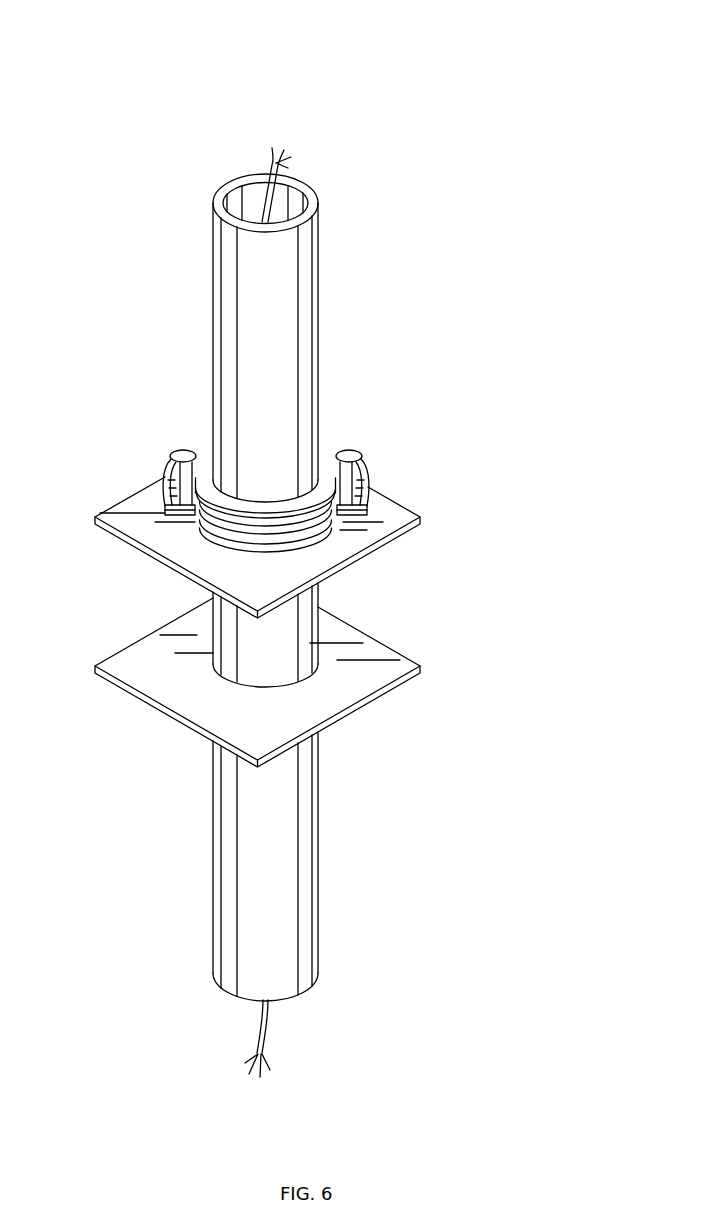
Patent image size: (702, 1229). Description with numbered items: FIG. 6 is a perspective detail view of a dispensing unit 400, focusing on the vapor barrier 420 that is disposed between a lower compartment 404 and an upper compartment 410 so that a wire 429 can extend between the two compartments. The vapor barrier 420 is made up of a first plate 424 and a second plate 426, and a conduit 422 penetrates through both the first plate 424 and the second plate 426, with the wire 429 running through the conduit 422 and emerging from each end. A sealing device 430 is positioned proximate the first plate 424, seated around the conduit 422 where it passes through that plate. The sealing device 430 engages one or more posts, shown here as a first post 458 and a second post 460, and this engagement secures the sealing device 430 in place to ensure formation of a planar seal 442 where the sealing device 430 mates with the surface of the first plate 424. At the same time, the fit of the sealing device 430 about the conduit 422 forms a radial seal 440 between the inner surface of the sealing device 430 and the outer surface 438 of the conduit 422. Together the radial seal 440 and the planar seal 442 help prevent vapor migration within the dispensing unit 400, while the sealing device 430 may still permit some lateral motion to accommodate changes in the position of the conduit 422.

The dispensing unit 400 is at (434, 76).
The lower compartment 404 is at (485, 1109).
The upper compartment 410 is at (128, 187).
The vapor barrier 420 is at (482, 515).
The conduit 422 is at (340, 310).
The first plate 424 is at (395, 500).
The second plate 426 is at (385, 687).
The wire 429 is at (270, 1025).
The sealing device 430 is at (383, 449).
The outer surface 438 is at (307, 243).
The radial seal 440 is at (209, 455).
The planar seal 442 is at (190, 541).
The first post 458 is at (184, 452).
The second post 460 is at (350, 454).